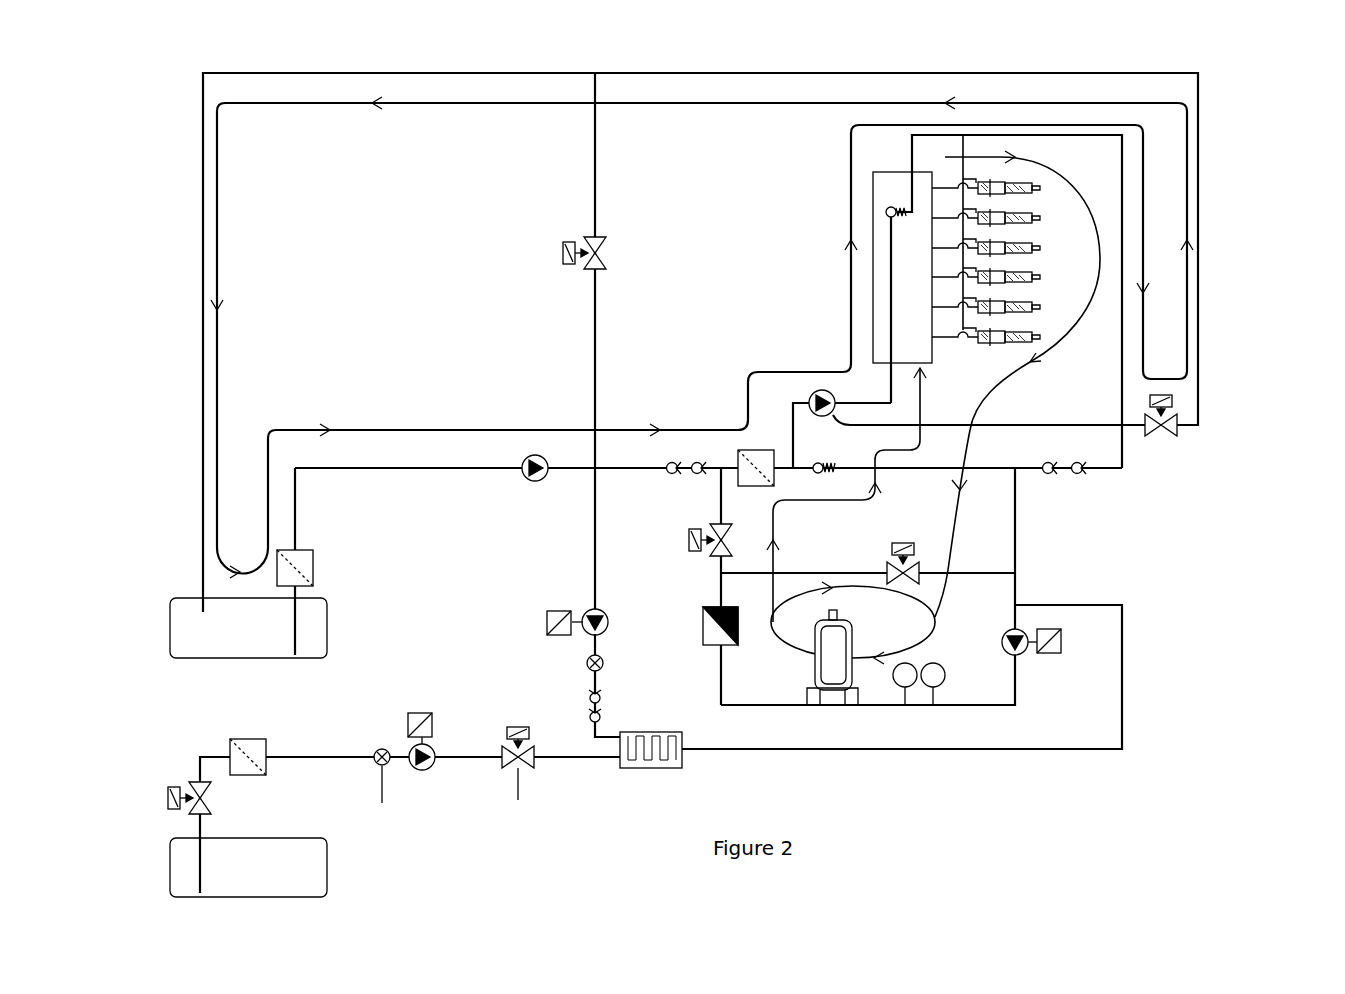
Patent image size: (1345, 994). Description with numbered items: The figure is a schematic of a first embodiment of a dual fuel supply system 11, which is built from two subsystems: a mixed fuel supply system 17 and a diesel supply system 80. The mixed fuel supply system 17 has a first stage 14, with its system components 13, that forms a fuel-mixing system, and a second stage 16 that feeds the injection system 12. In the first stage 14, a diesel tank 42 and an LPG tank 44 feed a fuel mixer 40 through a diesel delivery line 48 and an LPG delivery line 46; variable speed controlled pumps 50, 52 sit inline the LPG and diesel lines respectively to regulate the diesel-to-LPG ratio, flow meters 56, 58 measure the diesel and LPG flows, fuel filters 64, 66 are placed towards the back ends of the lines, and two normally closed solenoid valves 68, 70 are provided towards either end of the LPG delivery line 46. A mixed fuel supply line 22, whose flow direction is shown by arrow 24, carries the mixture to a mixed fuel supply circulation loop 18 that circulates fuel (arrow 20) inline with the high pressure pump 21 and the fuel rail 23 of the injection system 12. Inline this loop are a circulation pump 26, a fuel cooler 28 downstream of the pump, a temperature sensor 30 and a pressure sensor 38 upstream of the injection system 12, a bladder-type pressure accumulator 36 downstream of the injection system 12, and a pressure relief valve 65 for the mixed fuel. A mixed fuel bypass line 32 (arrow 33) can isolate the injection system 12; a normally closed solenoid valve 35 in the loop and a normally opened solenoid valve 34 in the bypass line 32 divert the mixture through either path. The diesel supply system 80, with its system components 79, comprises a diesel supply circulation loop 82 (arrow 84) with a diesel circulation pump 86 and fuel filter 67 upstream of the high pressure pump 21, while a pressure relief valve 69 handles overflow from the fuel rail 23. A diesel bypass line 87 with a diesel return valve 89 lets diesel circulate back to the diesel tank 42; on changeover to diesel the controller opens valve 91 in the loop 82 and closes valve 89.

The dual fuel supply system 11 is at (1240, 253).
The injection system 12 is at (830, 268).
The system components 13 is at (473, 573).
The first stage 14 is at (458, 770).
The second stage 16 is at (953, 790).
The mixed fuel supply system 17 is at (1165, 630).
The mixed fuel supply circulation loop 18 is at (1015, 535).
The mixed fuel supply circulation flow path 20 is at (975, 440).
The high pressure pump 21 is at (818, 380).
The mixed fuel supply line 22 is at (1122, 680).
The fuel rail 23 is at (923, 289).
The mixed fuel supply line flow path 24 is at (1080, 660).
The circulation pump 26 is at (1048, 622).
The fuel cooler 28 is at (703, 628).
The temperature sensor 30 is at (905, 685).
The mixed fuel bypass line 32 is at (797, 570).
The bypass flow path 33 is at (920, 600).
The normally opened solenoid valve 34 is at (914, 550).
The normally closed solenoid valve 35 is at (714, 532).
The pressure accumulator 36 is at (832, 650).
The pressure sensor 38 is at (945, 677).
The fuel mixer 40 is at (667, 768).
The diesel tank 42 is at (248, 628).
The LPG tank 44 is at (248, 867).
The LPG delivery line 46 is at (342, 750).
The diesel delivery line 48 is at (590, 550).
The variable speed controlled pump 50 is at (417, 715).
The variable speed controlled pump 52 is at (546, 618).
The flow meter 56 is at (587, 663).
The flow meter 58 is at (382, 791).
The fuel filter 64 is at (257, 745).
The pressure relief valve 65 is at (830, 460).
The fuel filter 66 is at (305, 573).
The fuel filter 67 is at (767, 450).
The normally closed solenoid valve 68 is at (173, 780).
The pressure relief valve 69 is at (885, 205).
The normally closed solenoid valve 70 is at (518, 778).
The system components 79 is at (432, 275).
The diesel supply system 80 is at (182, 273).
The diesel supply circulation loop 82 is at (500, 73).
The diesel circulation flow path 84 is at (287, 112).
The diesel circulation pump 86 is at (537, 452).
The diesel bypass line 87 is at (597, 355).
The diesel return valve 89 is at (603, 247).
The valve 91 is at (1161, 437).